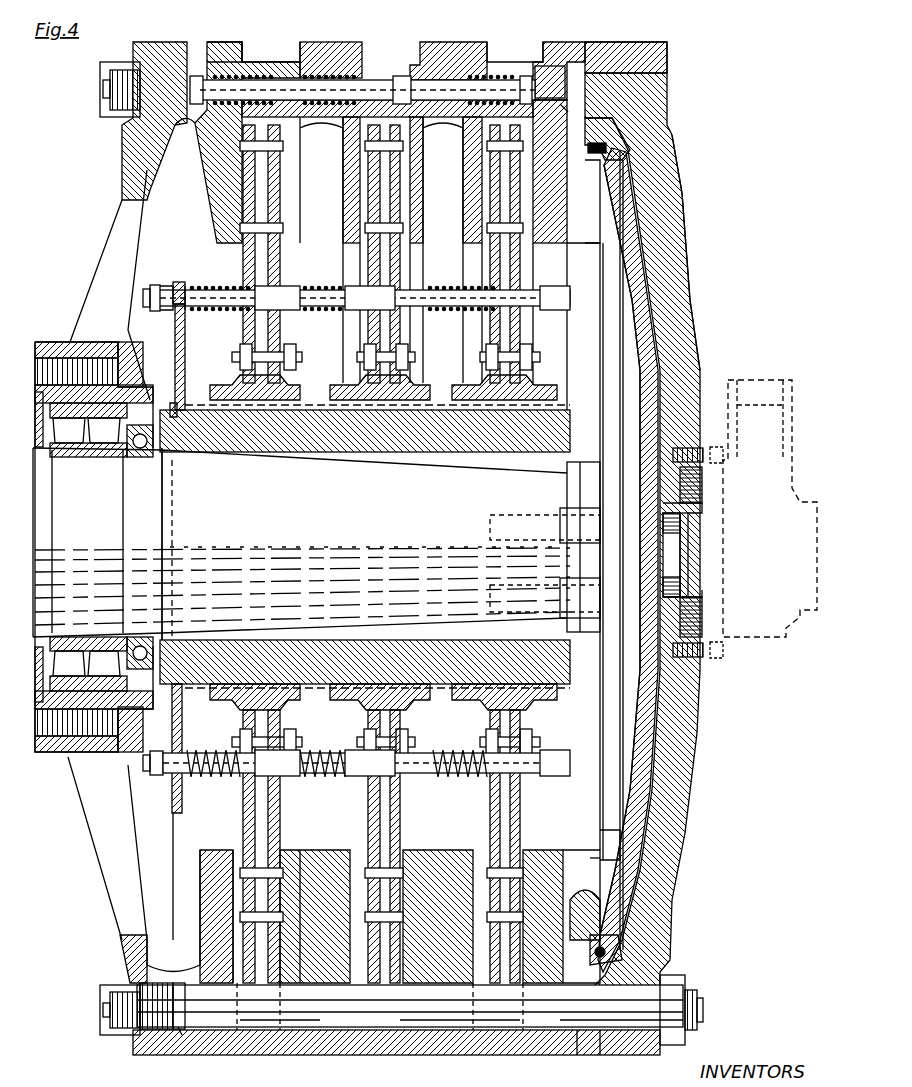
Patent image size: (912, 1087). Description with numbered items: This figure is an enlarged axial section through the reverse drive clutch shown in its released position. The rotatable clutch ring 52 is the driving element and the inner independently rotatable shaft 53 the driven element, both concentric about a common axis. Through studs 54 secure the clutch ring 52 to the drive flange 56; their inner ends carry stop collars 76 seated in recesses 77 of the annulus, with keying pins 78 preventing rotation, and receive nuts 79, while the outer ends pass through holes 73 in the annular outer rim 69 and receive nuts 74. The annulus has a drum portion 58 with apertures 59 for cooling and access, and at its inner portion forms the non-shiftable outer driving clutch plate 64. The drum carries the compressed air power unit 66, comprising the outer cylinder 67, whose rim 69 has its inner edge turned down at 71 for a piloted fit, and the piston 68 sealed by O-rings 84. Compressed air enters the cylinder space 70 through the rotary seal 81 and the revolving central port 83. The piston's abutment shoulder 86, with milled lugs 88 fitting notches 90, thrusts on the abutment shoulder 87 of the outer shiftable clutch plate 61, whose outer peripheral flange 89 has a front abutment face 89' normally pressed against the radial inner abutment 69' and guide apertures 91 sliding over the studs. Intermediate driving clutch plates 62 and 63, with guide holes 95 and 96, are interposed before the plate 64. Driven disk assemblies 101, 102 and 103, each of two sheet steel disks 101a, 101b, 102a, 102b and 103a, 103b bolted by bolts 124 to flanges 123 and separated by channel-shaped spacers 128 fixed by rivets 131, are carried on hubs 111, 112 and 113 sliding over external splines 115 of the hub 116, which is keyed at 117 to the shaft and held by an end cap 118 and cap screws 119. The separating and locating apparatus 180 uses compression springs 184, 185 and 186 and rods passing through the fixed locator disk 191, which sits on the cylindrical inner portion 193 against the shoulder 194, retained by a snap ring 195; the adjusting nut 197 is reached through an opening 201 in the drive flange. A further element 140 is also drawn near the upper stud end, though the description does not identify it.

The clutch ring 52 is at (218, 42).
The shaft 53 is at (346, 541).
The through studs 54 is at (375, 1015).
The drive flange 56 is at (141, 1050).
The drum portion 58 is at (324, 44).
The apertures 59 is at (256, 48).
The outer shiftable clutch plate 61 is at (540, 246).
The intermediate driving clutch plate 62 is at (425, 243).
The intermediate driving clutch plate 63 is at (342, 243).
The outer driving clutch plate 64 is at (226, 183).
The compressed air power unit 66 is at (695, 199).
The outer cylinder 67 is at (672, 267).
The piston 68 is at (642, 332).
The annular outer rim 69 is at (626, 42).
The radial inner abutment 69' is at (552, 56).
The cylinder space 70 is at (657, 368).
The turned-down inner edge 71 is at (580, 45).
The holes 73 is at (636, 1040).
The nuts 74 is at (678, 990).
The stop collars 76 is at (186, 1002).
The recesses 77 is at (173, 985).
The keying pins 78 is at (182, 1037).
The nuts 79 is at (110, 1040).
The rotary seal 81 is at (784, 630).
The central port 83 is at (674, 558).
The O-rings 84 is at (603, 147).
The abutment shoulder 86 is at (602, 830).
The abutment shoulder 87 is at (578, 248).
The milled lugs 88 is at (596, 858).
The outer peripheral flange 89 is at (569, 83).
The radial front abutment face 89' is at (584, 105).
The notches 90 is at (600, 250).
The guide apertures 91 is at (567, 931).
The guide holes 95 is at (398, 930).
The guide holes 96 is at (182, 675).
The driven clutch disk assembly 101 is at (505, 132).
The sheet steel disk 101a is at (512, 832).
The sheet steel disk 101b is at (490, 808).
The driven clutch disk assembly 102 is at (385, 130).
The sheet steel disk 102a is at (392, 843).
The sheet steel disk 102b is at (368, 836).
The driven clutch disk assembly 103 is at (262, 132).
The sheet steel disk 103a is at (283, 812).
The sheet steel disk 103b is at (250, 836).
The hub 111 is at (505, 400).
The hub 112 is at (390, 400).
The hub 113 is at (265, 400).
The external splines 115 is at (567, 397).
The hub 116 is at (568, 418).
The key 117 is at (545, 462).
The end cap 118 is at (585, 640).
The cap screws 119 is at (597, 528).
The flanges 123 is at (365, 375).
The bolts 124 is at (236, 355).
The channel-shaped spacers 128 is at (366, 879).
The rivets 131 is at (495, 972).
The bolt 140 is at (188, 96).
The separating and locating apparatus 180 is at (150, 297).
The compression spring 184 is at (453, 290).
The compression spring 185 is at (336, 288).
The compression spring 186 is at (208, 287).
The fixed locator disk 191 is at (180, 282).
The cylindrical inner portion 193 is at (179, 470).
The shoulder 194 is at (210, 418).
The snap ring 195 is at (170, 414).
The adjusting nut 197 is at (166, 288).
The opening 201 is at (111, 250).